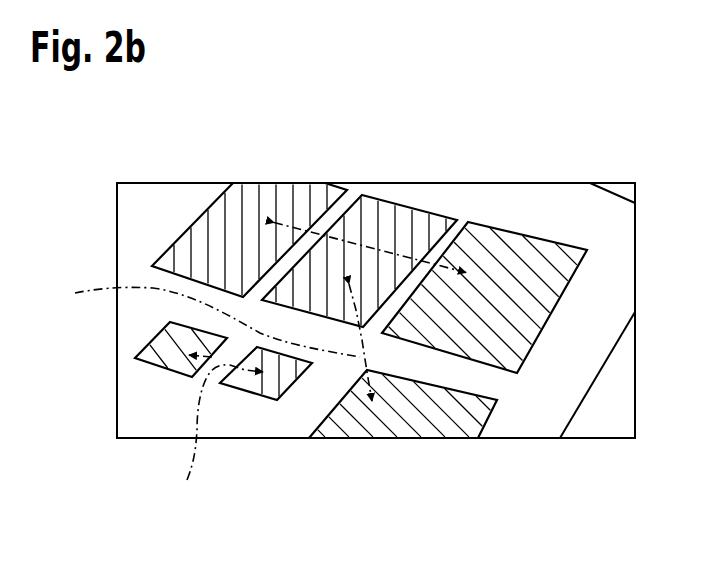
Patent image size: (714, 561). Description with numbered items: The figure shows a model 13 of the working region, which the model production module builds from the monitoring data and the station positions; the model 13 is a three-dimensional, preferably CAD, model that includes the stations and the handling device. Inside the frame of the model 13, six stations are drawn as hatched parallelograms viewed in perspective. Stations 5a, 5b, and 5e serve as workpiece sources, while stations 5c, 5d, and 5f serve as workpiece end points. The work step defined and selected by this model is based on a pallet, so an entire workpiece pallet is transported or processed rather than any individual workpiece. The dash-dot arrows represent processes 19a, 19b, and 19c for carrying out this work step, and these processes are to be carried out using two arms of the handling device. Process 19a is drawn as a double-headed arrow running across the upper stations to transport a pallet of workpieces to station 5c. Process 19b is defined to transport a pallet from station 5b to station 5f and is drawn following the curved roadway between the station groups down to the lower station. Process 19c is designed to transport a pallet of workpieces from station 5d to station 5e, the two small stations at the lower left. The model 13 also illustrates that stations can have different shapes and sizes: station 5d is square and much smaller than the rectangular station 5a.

The model 13 is at (126, 154).
The station 5a is at (247, 192).
The station 5b is at (385, 230).
The station 5c is at (535, 263).
The station 5d is at (175, 333).
The station 5e is at (250, 384).
The station 5f is at (437, 425).
The process 19a is at (318, 234).
The process 19b is at (202, 340).
The process 19c is at (215, 434).